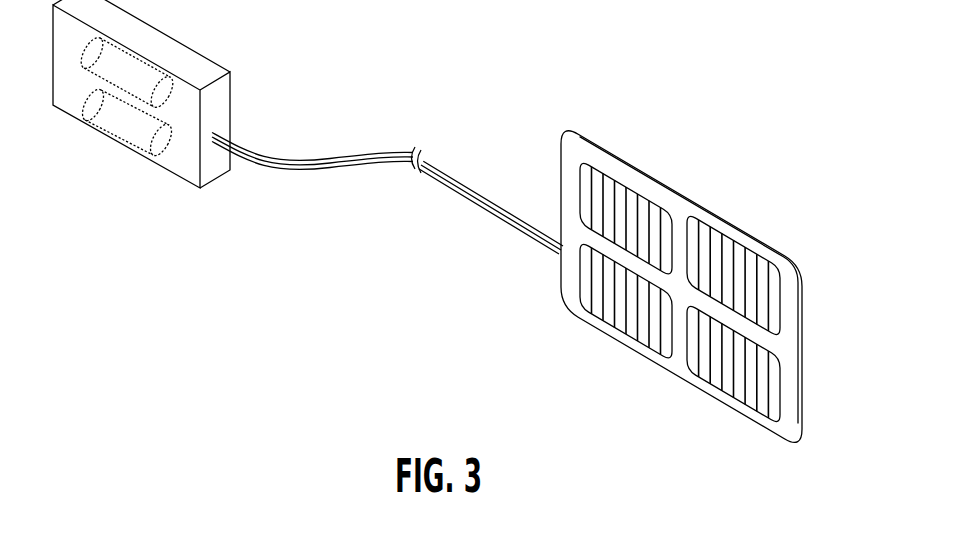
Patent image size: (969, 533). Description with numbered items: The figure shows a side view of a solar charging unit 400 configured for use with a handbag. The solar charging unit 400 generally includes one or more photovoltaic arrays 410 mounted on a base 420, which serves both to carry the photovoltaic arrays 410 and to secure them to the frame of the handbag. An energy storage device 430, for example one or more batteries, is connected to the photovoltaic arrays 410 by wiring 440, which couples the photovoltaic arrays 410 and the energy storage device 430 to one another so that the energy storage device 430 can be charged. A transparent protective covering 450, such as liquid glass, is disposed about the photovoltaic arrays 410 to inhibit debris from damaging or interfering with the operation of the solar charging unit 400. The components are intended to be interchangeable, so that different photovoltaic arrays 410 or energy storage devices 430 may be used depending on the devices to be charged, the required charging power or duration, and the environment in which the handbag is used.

The solar charging unit 400 is at (553, 52).
The photovoltaic arrays 410 is at (600, 279).
The base 420 is at (573, 158).
The energy storage device 430 is at (121, 70).
The wiring 440 is at (372, 155).
The transparent protective covering 450 is at (648, 246).